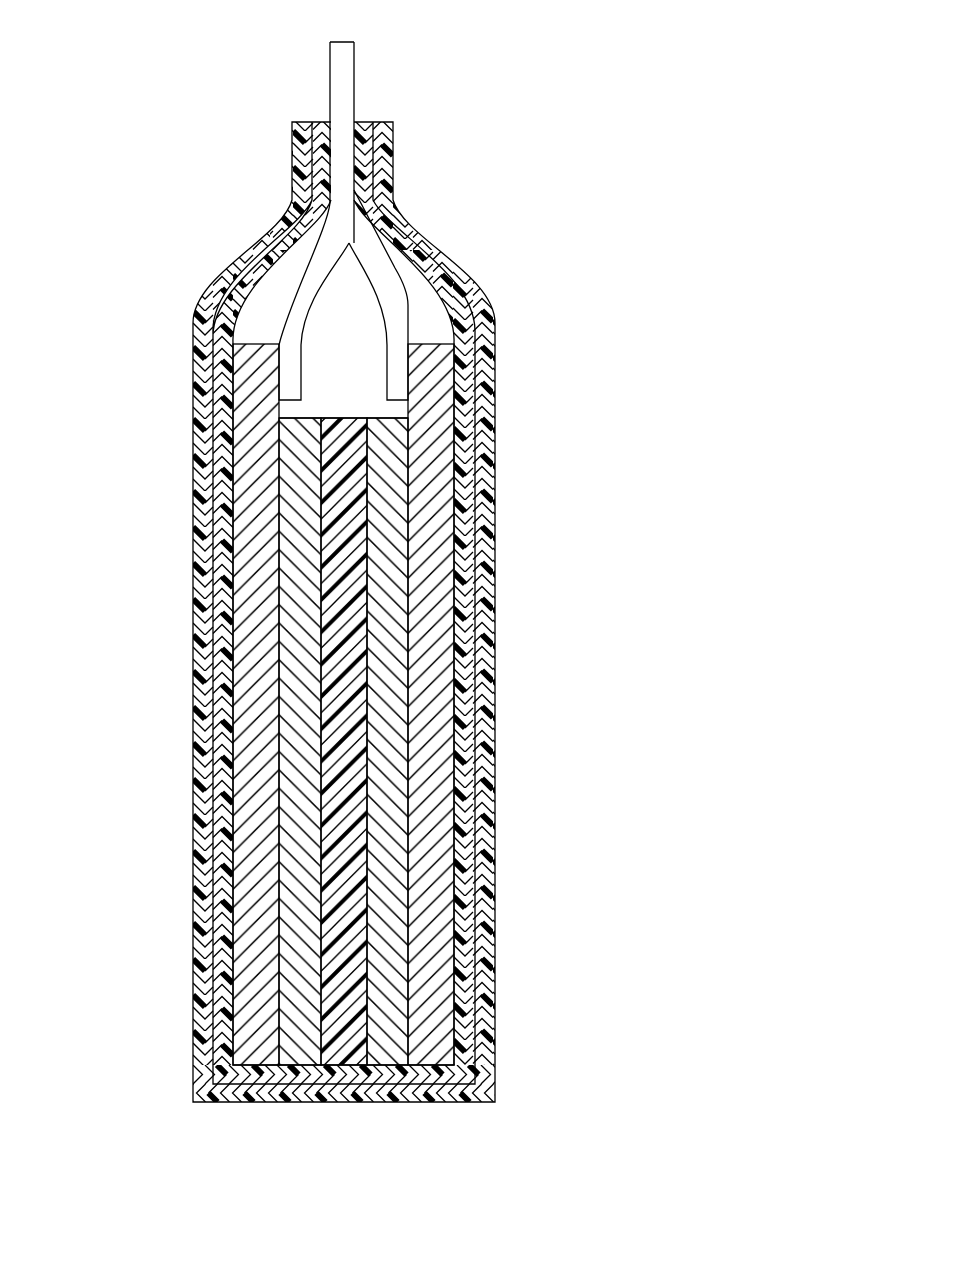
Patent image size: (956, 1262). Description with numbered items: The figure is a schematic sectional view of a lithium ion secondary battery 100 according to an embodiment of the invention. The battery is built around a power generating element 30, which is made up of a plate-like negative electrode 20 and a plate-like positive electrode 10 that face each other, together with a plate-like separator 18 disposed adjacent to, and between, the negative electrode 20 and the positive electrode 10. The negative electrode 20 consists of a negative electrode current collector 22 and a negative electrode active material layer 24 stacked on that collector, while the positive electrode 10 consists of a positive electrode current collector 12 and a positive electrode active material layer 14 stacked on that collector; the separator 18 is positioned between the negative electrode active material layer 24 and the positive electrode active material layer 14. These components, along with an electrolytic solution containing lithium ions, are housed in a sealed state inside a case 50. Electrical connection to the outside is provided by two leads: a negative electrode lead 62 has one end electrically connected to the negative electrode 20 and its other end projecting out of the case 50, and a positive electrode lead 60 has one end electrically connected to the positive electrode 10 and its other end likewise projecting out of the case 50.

The lithium ion secondary battery 100 is at (554, 74).
The case 50 is at (497, 665).
The power generating element 30 is at (76, 542).
The positive electrode 10 is at (127, 525).
The positive electrode current collector 12 is at (418, 532).
The positive electrode active material layer 14 is at (388, 568).
The separator 18 is at (345, 608).
The negative electrode 20 is at (127, 627).
The negative electrode current collector 22 is at (256, 667).
The negative electrode active material layer 24 is at (290, 636).
The positive electrode lead 60 is at (318, 265).
The negative electrode lead 62 is at (365, 265).